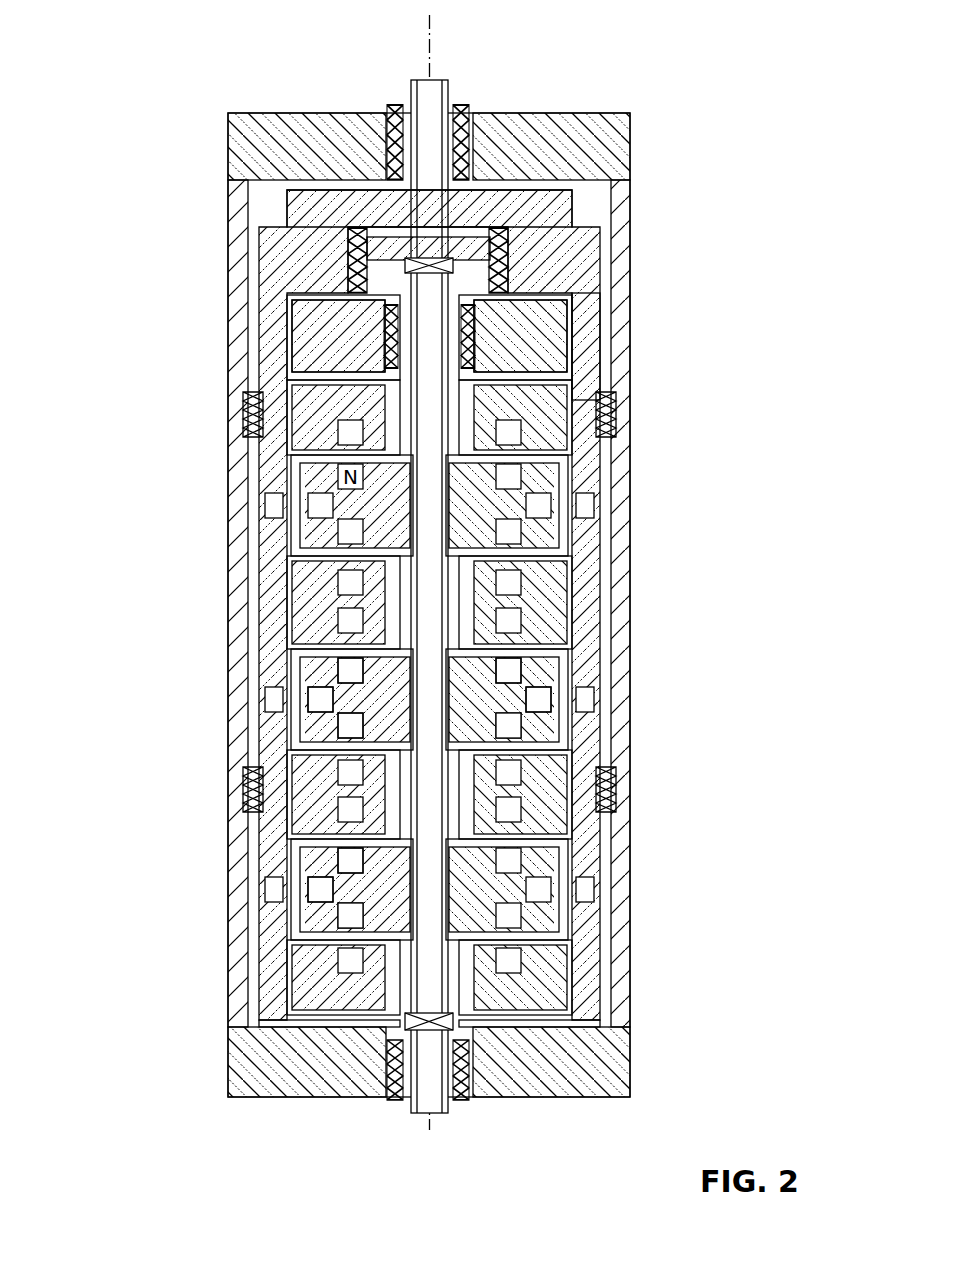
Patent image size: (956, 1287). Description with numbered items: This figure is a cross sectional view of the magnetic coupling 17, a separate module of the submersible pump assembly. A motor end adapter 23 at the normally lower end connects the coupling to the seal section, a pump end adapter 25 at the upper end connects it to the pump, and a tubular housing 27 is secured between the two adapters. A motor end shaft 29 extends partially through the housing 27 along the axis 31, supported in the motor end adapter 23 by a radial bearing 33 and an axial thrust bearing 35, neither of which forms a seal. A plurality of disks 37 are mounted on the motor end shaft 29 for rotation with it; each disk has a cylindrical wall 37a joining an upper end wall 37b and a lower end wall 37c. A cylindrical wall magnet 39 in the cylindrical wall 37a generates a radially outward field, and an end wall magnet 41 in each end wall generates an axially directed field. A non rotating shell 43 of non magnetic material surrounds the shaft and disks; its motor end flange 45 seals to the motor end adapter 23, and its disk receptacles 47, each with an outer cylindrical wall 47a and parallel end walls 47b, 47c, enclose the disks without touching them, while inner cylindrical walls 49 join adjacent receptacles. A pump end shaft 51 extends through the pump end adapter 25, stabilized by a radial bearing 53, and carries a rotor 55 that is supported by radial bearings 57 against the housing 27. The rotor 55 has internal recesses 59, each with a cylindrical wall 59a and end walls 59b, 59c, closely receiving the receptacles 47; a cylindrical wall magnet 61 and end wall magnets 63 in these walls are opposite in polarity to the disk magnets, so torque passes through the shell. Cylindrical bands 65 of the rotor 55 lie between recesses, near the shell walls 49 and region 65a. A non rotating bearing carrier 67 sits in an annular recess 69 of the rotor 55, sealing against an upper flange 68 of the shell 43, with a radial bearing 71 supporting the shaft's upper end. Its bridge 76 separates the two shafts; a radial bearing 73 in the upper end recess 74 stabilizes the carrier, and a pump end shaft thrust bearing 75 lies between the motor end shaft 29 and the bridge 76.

The magnetic coupling 17 is at (152, 88).
The motor end adapter 23 is at (224, 1059).
The pump end adapter 25 is at (606, 104).
The tubular housing 27 is at (632, 197).
The motor end shaft 29 is at (482, 996).
The axis 31 is at (432, 40).
The radial bearing 33 is at (457, 1100).
The axial thrust bearing 35 is at (405, 1032).
The disk 37 is at (590, 536).
The cylindrical wall 37a is at (602, 669).
The upper end wall 37b is at (612, 632).
The lower end wall 37c is at (602, 752).
The cylindrical wall magnet 39 is at (300, 478).
The end wall magnet 41 is at (300, 540).
The shell 43 is at (580, 372).
The motor end flange 45 is at (615, 1021).
The disk receptacle 47 is at (290, 870).
The outer cylindrical wall 47a is at (290, 905).
The end wall 47b is at (290, 822).
The end wall 47c is at (290, 968).
The inner cylindrical wall 49 is at (272, 1003).
The pump end shaft 51 is at (452, 108).
The radial bearing 53 is at (393, 175).
The rotor 55 is at (578, 595).
The radial bearing 57 is at (242, 412).
The internal recess 59 is at (290, 722).
The cylindrical wall 59a is at (290, 660).
The end wall 59b is at (290, 640).
The end wall 59c is at (290, 742).
The cylindrical wall magnet 61 is at (602, 880).
The end wall magnet 63 is at (300, 445).
The cylindrical band 65 is at (580, 445).
The right body section 65a is at (602, 382).
The bearing carrier 67 is at (300, 332).
The upper flange 68 is at (276, 365).
The annular recess 69 is at (300, 340).
The radial bearing 71 is at (560, 332).
The radial bearing 73 is at (352, 265).
The upper end recess 74 is at (290, 197).
The pump end shaft thrust bearing 75 is at (393, 186).
The bridge 76 is at (470, 240).